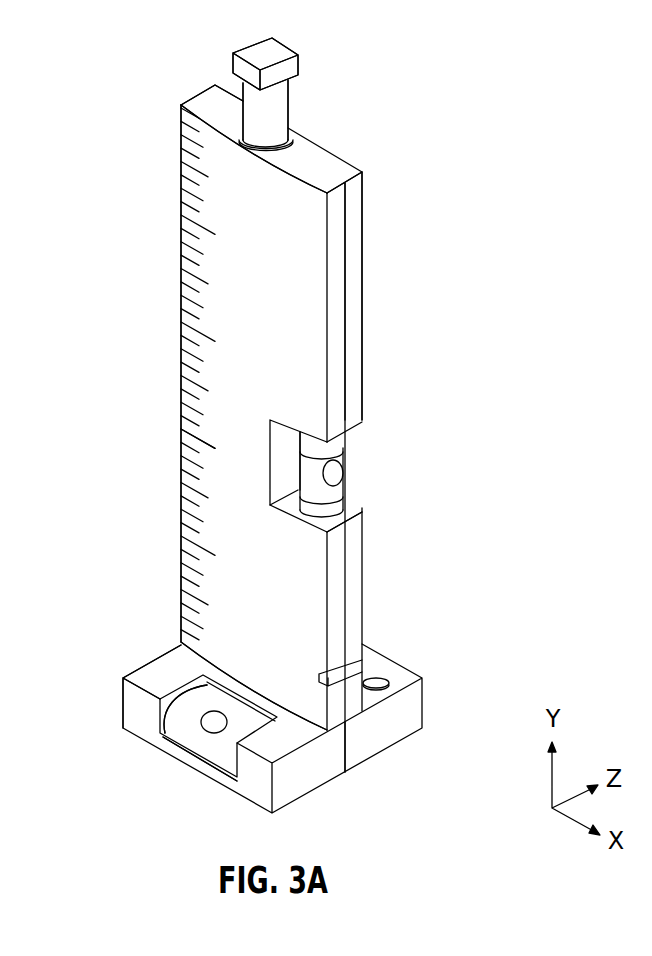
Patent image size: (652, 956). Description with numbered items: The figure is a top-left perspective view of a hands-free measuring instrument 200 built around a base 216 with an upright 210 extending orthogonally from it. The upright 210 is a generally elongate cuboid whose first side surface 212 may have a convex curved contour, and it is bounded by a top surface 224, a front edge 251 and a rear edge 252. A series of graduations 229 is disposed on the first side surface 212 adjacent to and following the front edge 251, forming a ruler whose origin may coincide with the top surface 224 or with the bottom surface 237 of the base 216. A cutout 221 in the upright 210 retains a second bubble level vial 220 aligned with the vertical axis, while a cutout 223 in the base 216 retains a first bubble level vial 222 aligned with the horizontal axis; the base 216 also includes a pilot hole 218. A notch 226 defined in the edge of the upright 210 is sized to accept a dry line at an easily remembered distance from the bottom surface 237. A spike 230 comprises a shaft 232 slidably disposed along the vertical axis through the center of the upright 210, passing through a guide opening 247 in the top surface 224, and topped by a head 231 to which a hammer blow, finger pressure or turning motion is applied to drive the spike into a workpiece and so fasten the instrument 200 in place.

The measuring instrument 200 is at (424, 91).
The upright 210 is at (368, 230).
The first side surface 212 is at (308, 287).
The front edge 251 is at (363, 295).
The top surface 224 is at (200, 108).
The rear edge 252 is at (181, 343).
The graduations 229 is at (210, 402).
The spike 230 is at (240, 43).
The head 231 is at (288, 63).
The shaft 232 is at (280, 105).
The guide opening 247 is at (295, 140).
The second bubble level vial 220 is at (343, 460).
The cutout 221 is at (355, 507).
The base 216 is at (431, 709).
The bottom surface 237 is at (163, 673).
The cutout 223 is at (168, 715).
The first bubble level vial 222 is at (222, 748).
The pilot hole 218 is at (372, 680).
The notch 226 is at (345, 680).